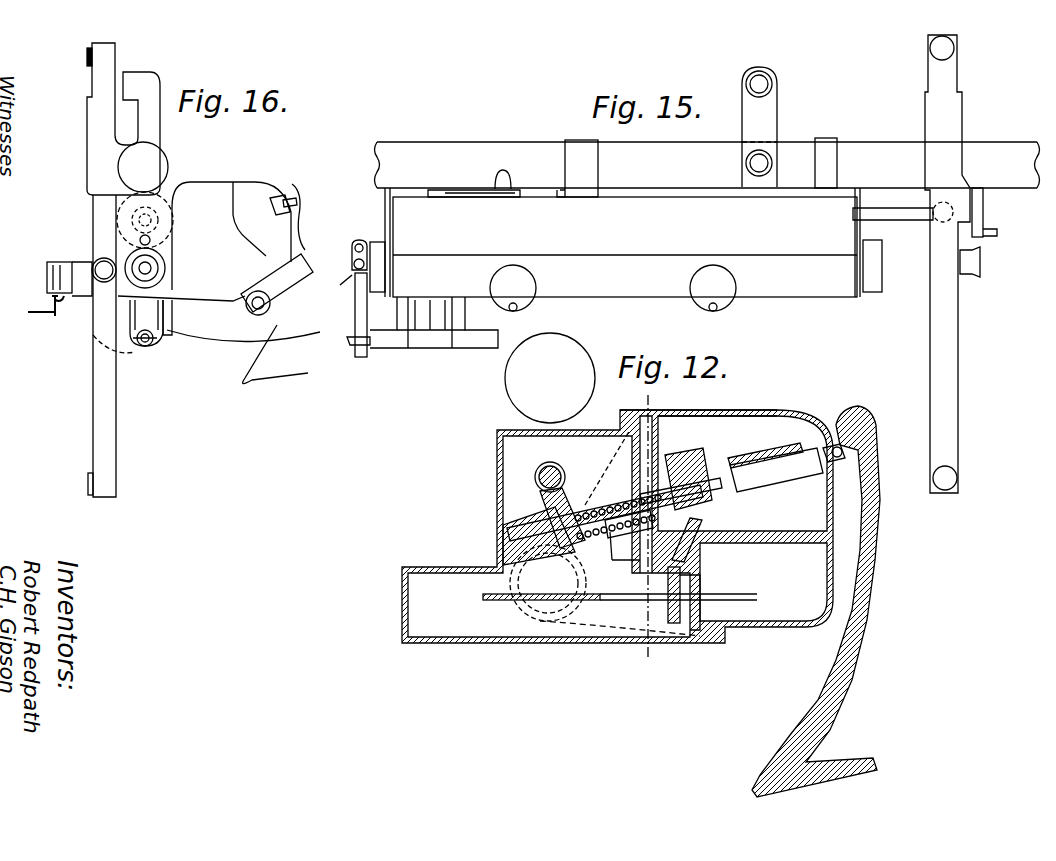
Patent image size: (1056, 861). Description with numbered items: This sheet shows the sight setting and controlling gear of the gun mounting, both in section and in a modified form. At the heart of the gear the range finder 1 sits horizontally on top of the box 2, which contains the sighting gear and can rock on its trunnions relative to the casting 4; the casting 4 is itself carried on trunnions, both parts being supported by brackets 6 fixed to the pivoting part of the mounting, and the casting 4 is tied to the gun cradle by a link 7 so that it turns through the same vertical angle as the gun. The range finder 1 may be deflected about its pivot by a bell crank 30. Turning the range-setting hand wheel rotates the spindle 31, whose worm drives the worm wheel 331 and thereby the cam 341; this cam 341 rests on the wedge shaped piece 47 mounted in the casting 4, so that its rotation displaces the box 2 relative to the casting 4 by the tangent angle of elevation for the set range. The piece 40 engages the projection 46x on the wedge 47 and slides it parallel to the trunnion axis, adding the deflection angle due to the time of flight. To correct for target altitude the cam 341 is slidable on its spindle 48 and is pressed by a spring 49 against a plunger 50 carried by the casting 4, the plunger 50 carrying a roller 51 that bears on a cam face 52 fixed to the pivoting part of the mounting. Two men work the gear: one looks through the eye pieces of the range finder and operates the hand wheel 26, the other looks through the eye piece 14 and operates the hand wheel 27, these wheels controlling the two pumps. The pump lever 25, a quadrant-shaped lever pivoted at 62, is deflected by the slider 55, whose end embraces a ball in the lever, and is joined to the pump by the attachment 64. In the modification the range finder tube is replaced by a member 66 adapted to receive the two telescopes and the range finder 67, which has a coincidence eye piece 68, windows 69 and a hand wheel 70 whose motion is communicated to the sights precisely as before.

In FIG. 12, the range finder 1 is at (550, 378).
In FIG. 15, the box 2 is at (625, 247).
In FIG. 12, the box 2 is at (568, 643).
In FIG. 16, the casting 4 is at (204, 241).
In FIG. 15, the casting 4 is at (385, 212).
In FIG. 12, the casting 4 is at (726, 410).
In FIG. 16, the brackets 6 is at (220, 332).
In FIG. 15, the brackets 6 is at (378, 290).
In FIG. 16, the link 7 is at (285, 288).
In FIG. 12, the eye piece 14 is at (629, 528).
In FIG. 16, the pump lever 25 is at (133, 353).
In FIG. 15, the pump lever 25 is at (359, 358).
In FIG. 16, the hand wheel 26 is at (52, 300).
In FIG. 15, the hand wheel 26 is at (730, 286).
In FIG. 15, the hand wheel 27 is at (530, 286).
In FIG. 15, the bell crank 30 is at (482, 188).
In FIG. 16, the spindle 31 is at (152, 222).
In FIG. 15, the spindle 31 is at (900, 212).
In FIG. 12, the spindle 31 is at (536, 475).
In FIG. 12, the piece 40 is at (740, 594).
In FIG. 12, the projection 46x is at (692, 628).
In FIG. 12, the wedge shaped piece 47 is at (700, 522).
In FIG. 12, the spindle 48 is at (632, 492).
In FIG. 12, the spring 49 is at (606, 534).
In FIG. 16, the plunger 50 is at (280, 197).
In FIG. 12, the plunger 50 is at (790, 450).
In FIG. 16, the roller 51 is at (298, 205).
In FIG. 12, the roller 51 is at (846, 456).
In FIG. 16, the cam face 52 is at (302, 236).
In FIG. 12, the cam face 52 is at (870, 520).
In FIG. 16, the slider 55 is at (165, 348).
In FIG. 15, the slider 55 is at (437, 348).
In FIG. 16, the pivot 62 is at (48, 262).
In FIG. 15, the pivot 62 is at (347, 275).
In FIG. 15, the attachment to the pump 64 is at (359, 243).
In FIG. 16, the member 66 is at (153, 160).
In FIG. 15, the member 66 is at (707, 132).
In FIG. 16, the range finder 67 is at (93, 383).
In FIG. 15, the range finder 67 is at (958, 352).
In FIG. 16, the coincidence eye piece 68 is at (100, 260).
In FIG. 15, the coincidence eye piece 68 is at (980, 262).
In FIG. 16, the windows 69 is at (86, 57).
In FIG. 15, the windows 69 is at (954, 48).
In FIG. 16, the hand wheel 70 is at (160, 200).
In FIG. 15, the hand wheel 70 is at (984, 204).
In FIG. 12, the worm wheel 331 is at (570, 490).
In FIG. 12, the cam 341 is at (690, 455).